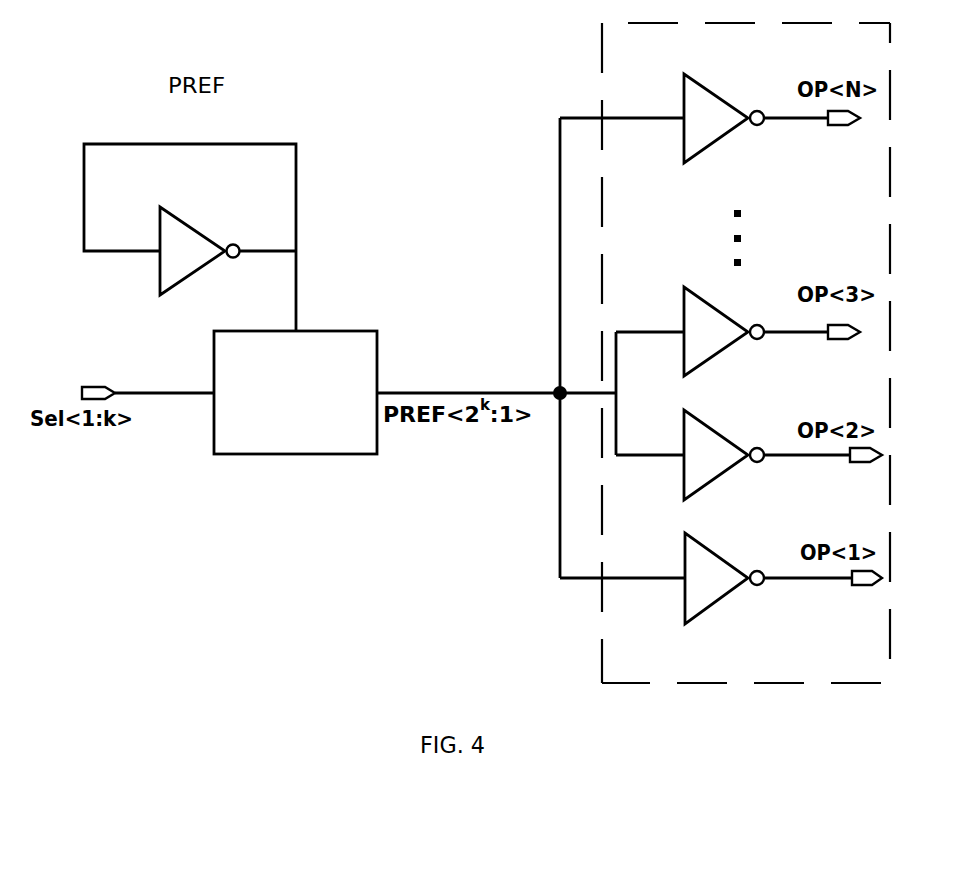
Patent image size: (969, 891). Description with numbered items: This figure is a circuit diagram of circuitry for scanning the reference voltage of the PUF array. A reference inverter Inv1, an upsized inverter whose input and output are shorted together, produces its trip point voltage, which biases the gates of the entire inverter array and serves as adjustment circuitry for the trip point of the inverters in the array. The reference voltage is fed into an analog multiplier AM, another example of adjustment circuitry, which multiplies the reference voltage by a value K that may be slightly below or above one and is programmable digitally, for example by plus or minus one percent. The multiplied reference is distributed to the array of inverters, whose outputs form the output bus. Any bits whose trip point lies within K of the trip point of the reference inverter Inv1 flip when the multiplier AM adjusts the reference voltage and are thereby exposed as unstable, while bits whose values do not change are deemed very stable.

The analog multiplier AM is at (352, 335).
The reference inverter Inv1 is at (190, 237).